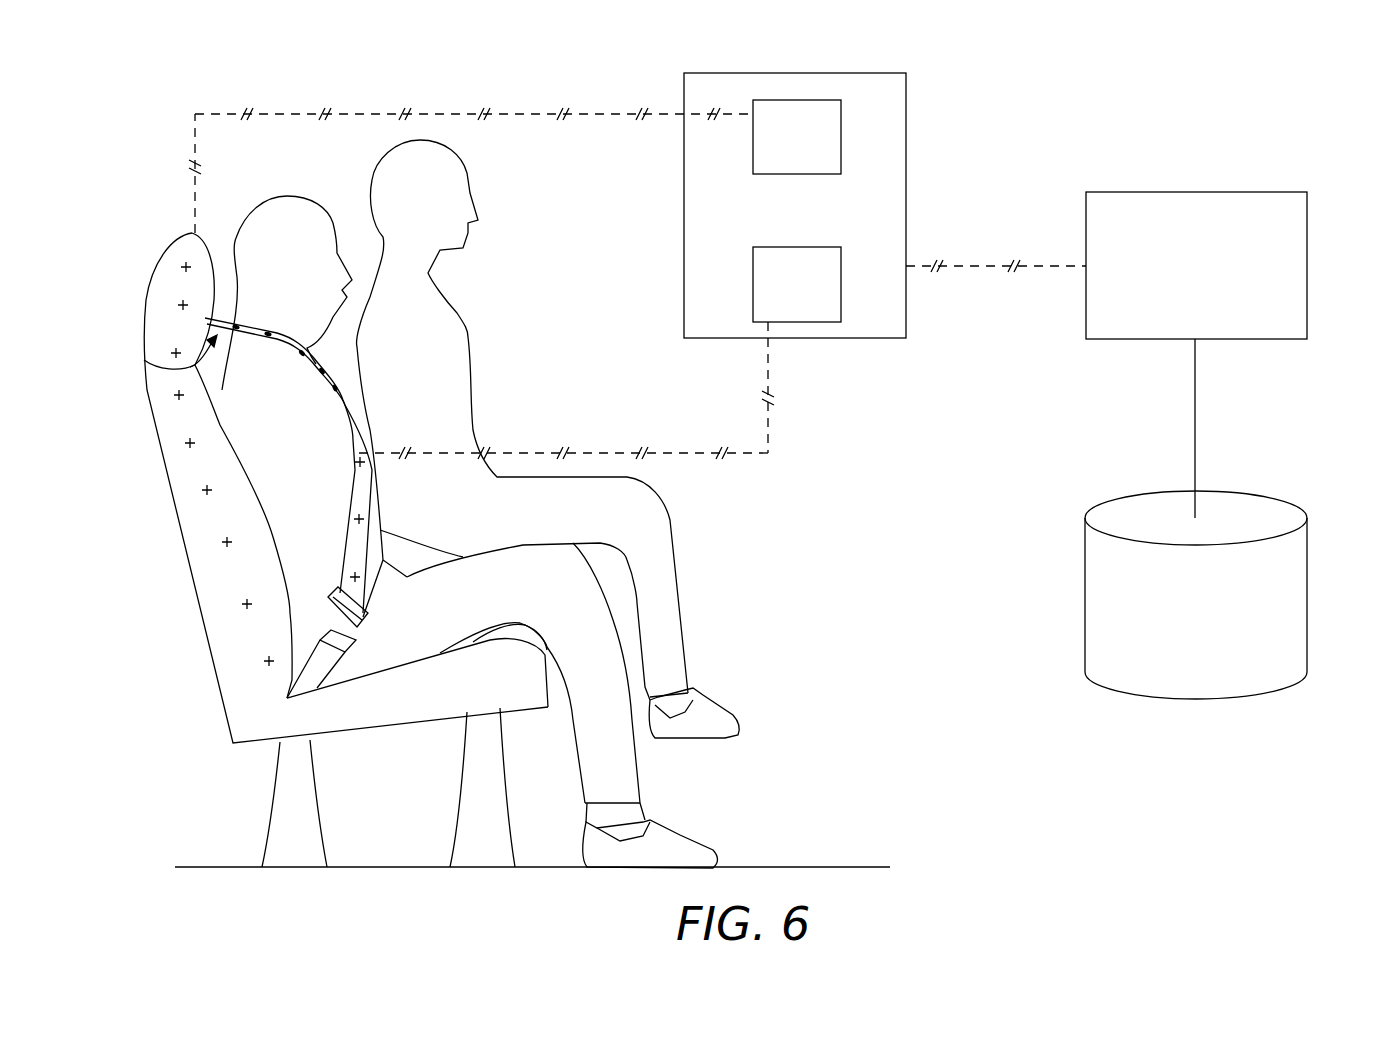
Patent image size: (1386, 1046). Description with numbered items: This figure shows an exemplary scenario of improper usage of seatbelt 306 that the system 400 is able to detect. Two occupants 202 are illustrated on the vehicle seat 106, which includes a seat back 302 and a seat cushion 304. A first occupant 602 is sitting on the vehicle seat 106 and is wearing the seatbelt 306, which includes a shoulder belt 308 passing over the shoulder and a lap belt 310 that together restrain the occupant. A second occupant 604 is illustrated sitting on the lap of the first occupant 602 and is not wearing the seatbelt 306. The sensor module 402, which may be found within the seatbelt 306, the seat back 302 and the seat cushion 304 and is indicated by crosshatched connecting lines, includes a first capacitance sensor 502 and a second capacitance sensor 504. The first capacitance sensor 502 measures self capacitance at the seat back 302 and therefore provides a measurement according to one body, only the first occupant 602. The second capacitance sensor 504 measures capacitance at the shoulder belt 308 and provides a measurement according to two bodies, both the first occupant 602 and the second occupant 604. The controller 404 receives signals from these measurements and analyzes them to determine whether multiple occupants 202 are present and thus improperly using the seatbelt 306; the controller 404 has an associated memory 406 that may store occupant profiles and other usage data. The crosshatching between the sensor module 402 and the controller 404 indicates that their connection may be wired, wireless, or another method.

The vehicle seat 106 is at (148, 248).
The occupant 202 is at (342, 177).
The seat back 302 is at (167, 290).
The seat cushion 304 is at (388, 713).
The seatbelt 306 is at (150, 360).
The shoulder belt 308 is at (360, 527).
The lap belt 310 is at (380, 583).
The system 400 is at (1283, 108).
The sensor module 402 is at (795, 205).
The controller 404 is at (1196, 265).
The memory 406 is at (1196, 595).
The first capacitance sensor 502 is at (797, 137).
The second capacitance sensor 504 is at (797, 284).
The first occupant 602 is at (262, 432).
The second occupant 604 is at (468, 337).